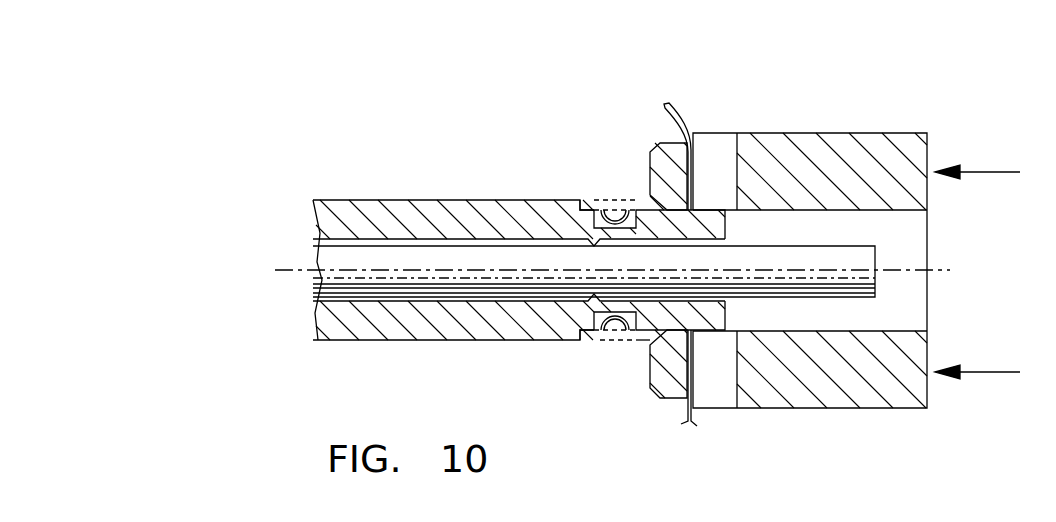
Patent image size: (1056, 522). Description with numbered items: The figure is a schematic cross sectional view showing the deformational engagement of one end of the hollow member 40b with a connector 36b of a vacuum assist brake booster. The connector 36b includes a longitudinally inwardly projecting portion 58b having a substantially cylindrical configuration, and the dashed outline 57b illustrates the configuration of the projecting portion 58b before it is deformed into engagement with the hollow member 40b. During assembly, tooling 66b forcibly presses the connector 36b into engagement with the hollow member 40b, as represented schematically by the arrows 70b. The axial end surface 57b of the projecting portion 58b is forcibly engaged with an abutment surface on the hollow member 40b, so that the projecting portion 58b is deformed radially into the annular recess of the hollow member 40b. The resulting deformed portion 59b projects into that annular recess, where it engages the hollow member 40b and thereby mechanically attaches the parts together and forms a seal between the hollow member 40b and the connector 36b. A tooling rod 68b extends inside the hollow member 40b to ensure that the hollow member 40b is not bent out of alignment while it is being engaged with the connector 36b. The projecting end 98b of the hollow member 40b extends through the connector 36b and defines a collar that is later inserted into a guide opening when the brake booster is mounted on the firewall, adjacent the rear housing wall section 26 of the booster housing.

The rear housing wall section 26 is at (689, 115).
The connector 36b is at (673, 399).
The hollow member 40b is at (437, 218).
The axial end surface 57b is at (580, 207).
The projecting portion 58b is at (616, 205).
The deformed portion 59b is at (611, 217).
The tooling 66b is at (868, 133).
The tooling rod 68b is at (877, 256).
The arrows 70b is at (998, 172).
The projecting end 98b is at (697, 337).